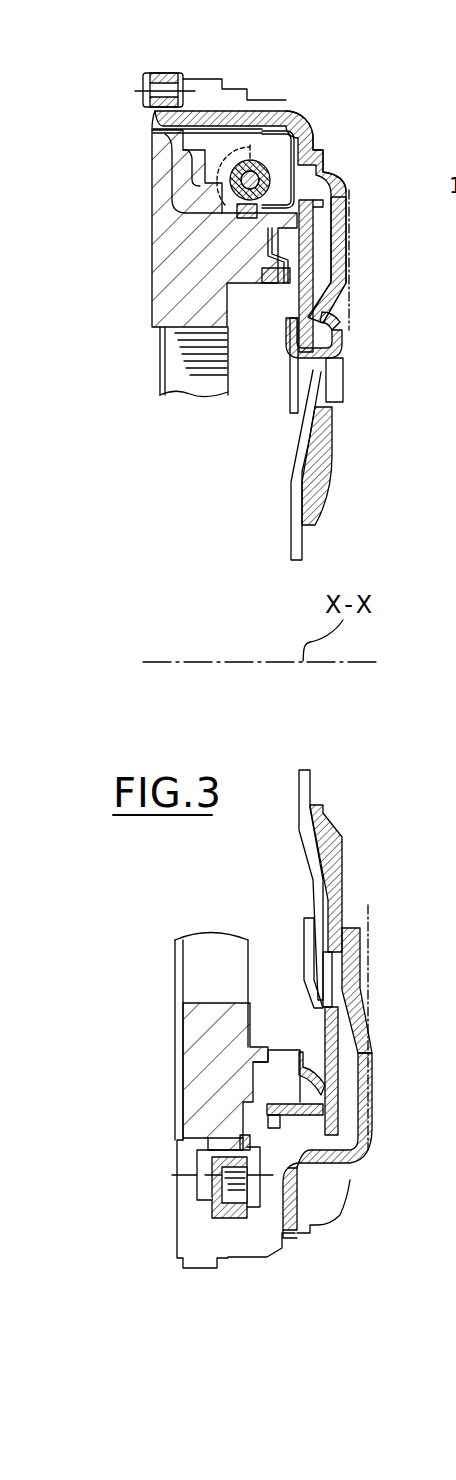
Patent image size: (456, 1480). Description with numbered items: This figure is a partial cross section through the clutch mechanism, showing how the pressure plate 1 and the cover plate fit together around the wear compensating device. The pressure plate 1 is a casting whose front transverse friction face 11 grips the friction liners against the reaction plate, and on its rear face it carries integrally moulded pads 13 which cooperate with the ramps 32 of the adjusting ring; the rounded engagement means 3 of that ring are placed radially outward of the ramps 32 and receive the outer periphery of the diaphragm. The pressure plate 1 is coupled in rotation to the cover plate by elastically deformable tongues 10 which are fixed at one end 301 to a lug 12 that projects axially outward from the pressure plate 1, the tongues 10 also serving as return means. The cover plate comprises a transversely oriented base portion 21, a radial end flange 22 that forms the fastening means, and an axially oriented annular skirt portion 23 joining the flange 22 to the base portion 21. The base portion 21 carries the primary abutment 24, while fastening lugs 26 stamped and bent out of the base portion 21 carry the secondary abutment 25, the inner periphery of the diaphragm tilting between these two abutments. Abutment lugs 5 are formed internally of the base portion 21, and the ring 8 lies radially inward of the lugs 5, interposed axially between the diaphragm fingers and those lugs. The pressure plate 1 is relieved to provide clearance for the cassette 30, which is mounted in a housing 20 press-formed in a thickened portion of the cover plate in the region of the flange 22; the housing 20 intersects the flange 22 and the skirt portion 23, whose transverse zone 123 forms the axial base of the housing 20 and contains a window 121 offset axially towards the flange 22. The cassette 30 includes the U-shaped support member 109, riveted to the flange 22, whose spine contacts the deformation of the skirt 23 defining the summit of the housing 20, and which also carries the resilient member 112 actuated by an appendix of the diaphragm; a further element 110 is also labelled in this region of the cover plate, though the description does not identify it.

The pressure plate 1 is at (170, 1146).
The engagement means 3 is at (322, 1088).
The abutment lugs 5 is at (362, 945).
The ring 8 is at (348, 835).
The tongues 10 is at (258, 1222).
The front transverse friction face 11 is at (157, 244).
The lug 12 is at (230, 1220).
The pads 13 is at (268, 1079).
The housing 20 is at (258, 96).
The base portion 21 is at (347, 240).
The radial end flange 22 is at (160, 73).
The annular skirt portion 23 is at (338, 1166).
The primary abutment 24 is at (324, 326).
The secondary abutment 25 is at (290, 331).
The fastening lugs 26 is at (344, 369).
The cassette 30 is at (166, 137).
The ramps 32 is at (268, 266).
The support member 109 is at (148, 118).
The cover bend 110 is at (290, 110).
The resilient member 112 is at (308, 196).
The window 121 is at (337, 170).
The transverse zone 123 is at (313, 134).
The end 301 is at (212, 1207).